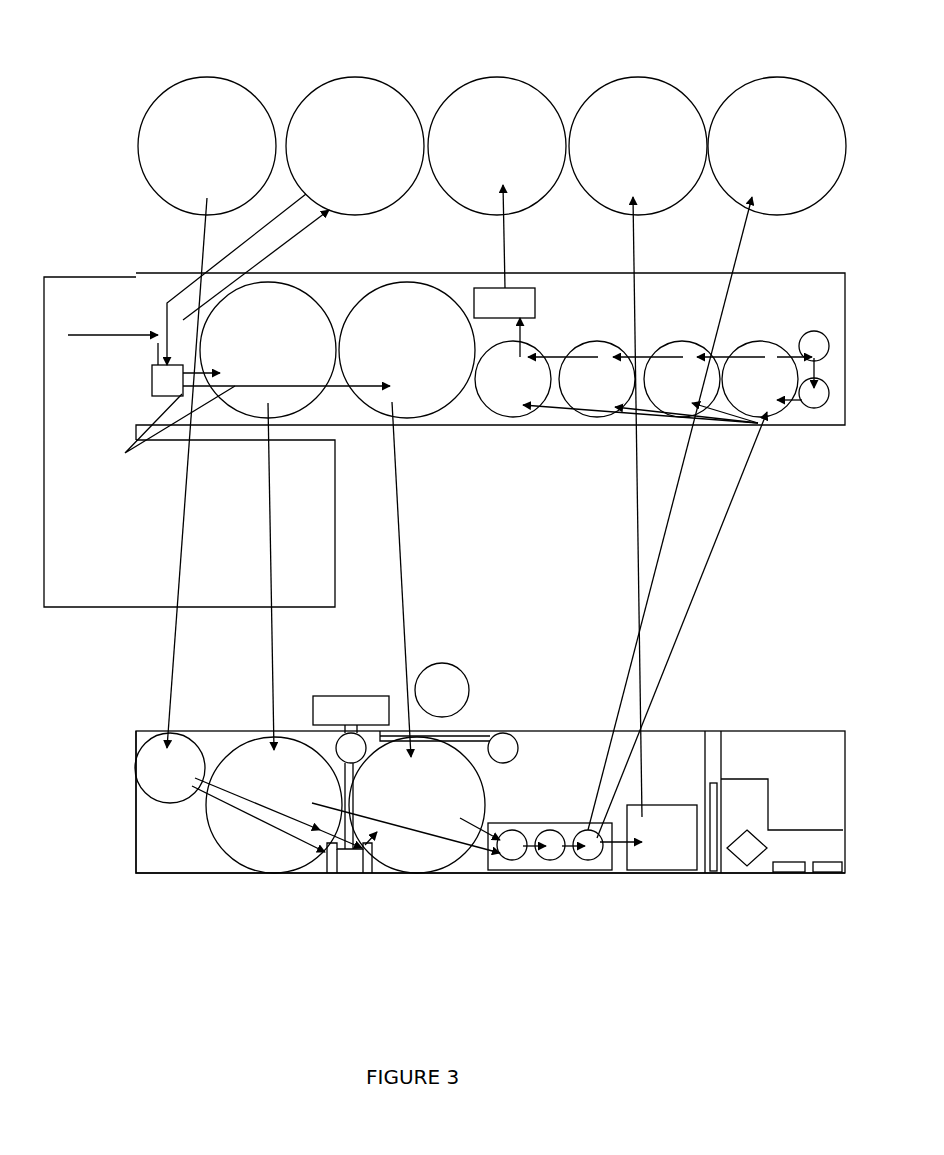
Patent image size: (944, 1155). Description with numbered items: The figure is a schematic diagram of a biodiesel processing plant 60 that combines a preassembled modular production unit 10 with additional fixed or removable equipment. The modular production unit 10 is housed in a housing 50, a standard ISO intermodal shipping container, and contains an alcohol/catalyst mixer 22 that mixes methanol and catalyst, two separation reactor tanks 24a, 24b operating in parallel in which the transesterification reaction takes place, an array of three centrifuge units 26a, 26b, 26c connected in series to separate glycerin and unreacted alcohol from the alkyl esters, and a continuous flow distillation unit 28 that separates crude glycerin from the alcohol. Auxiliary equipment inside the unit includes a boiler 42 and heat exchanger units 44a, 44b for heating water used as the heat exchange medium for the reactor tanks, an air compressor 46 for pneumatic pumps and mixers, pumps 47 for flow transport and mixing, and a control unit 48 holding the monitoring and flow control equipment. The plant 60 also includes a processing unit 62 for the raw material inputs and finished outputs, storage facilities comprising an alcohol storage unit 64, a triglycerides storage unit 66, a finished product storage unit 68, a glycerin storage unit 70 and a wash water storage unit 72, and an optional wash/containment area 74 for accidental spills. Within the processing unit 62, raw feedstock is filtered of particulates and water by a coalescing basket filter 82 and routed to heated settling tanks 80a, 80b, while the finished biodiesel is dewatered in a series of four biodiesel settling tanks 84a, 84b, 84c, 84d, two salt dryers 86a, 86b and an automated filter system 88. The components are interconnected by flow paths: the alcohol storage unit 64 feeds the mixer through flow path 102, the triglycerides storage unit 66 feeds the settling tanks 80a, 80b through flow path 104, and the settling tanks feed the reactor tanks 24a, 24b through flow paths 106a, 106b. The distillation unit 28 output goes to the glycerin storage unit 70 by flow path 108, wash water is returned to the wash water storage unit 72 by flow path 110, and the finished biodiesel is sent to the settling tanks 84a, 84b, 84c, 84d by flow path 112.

The modular production unit 10 is at (125, 820).
The alcohol/catalyst mixer 22 is at (135, 770).
The separation reactor tank 24a is at (274, 873).
The separation reactor tank 24b is at (420, 872).
The first centrifuge unit 26a is at (510, 862).
The second centrifuge unit 26b is at (550, 862).
The third centrifuge unit 26c is at (588, 862).
The continuous flow distillation unit 28 is at (657, 873).
The boiler 42 is at (350, 695).
The heat exchanger unit 44a is at (338, 750).
The heat exchanger unit 44b is at (505, 733).
The air compressor 46 is at (460, 675).
The pumps 47 is at (350, 862).
The control unit 48 is at (797, 815).
The housing 50 is at (136, 866).
The biodiesel processing plant 60 is at (52, 105).
The processing unit 62 is at (830, 255).
The alcohol storage unit 64 is at (205, 76).
The triglycerides storage unit 66 is at (348, 76).
The finished product storage unit 68 is at (497, 76).
The glycerin storage unit 70 is at (636, 76).
The wash water storage unit 72 is at (777, 76).
The wash/containment area 74 is at (60, 607).
The settling tank 80a is at (277, 282).
The settling tank 80b is at (407, 282).
The coalescing basket filter 82 is at (152, 380).
The biodiesel settling tank 84a is at (512, 420).
The biodiesel settling tank 84b is at (597, 418).
The biodiesel settling tank 84c is at (675, 395).
The biodiesel settling tank 84d is at (775, 415).
The salt dryer 86a is at (827, 348).
The salt dryer 86b is at (827, 392).
The automated filter system 88 is at (505, 288).
The flow path 102 is at (170, 683).
The flow path 104 is at (262, 229).
The flow path 106a is at (270, 667).
The flow path 106b is at (405, 603).
The flow path 108 is at (636, 586).
The flow path 110 is at (743, 234).
The flow path 112 is at (690, 602).